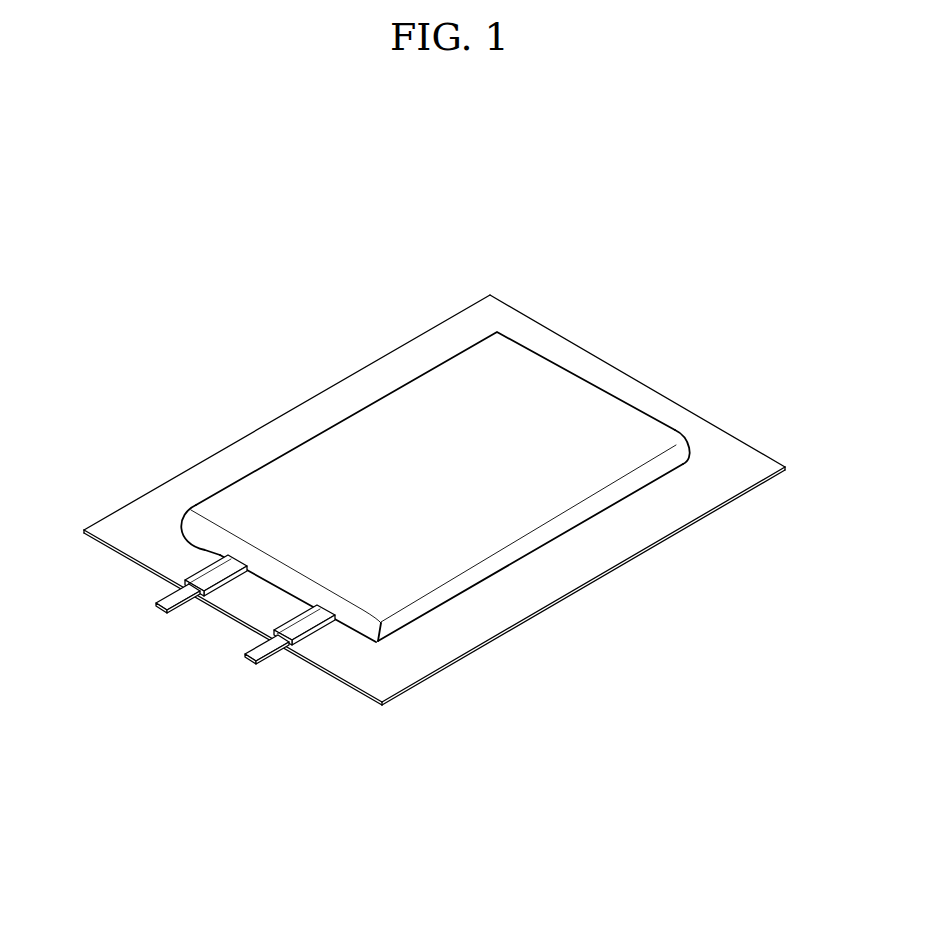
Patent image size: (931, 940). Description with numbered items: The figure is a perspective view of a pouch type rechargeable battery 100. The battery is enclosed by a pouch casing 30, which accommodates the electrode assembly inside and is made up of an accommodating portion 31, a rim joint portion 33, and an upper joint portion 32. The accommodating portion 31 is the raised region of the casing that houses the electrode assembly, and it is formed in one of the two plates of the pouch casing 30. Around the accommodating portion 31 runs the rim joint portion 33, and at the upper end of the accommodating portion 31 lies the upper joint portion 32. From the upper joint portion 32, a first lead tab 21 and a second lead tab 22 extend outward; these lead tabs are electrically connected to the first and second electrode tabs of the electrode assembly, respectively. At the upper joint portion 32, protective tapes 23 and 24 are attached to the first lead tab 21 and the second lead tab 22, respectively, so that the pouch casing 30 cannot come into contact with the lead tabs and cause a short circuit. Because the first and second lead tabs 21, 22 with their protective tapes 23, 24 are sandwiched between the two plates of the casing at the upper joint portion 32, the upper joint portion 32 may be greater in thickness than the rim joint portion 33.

The rechargeable battery 100 is at (420, 218).
The pouch casing 30 is at (325, 371).
The accommodating portion 31 is at (488, 522).
The upper joint portion 32 is at (347, 653).
The rim joint portion 33 is at (640, 530).
The first lead tab 21 is at (247, 658).
The second lead tab 22 is at (156, 599).
The protective tape 23 is at (288, 652).
The protective tape 24 is at (193, 605).